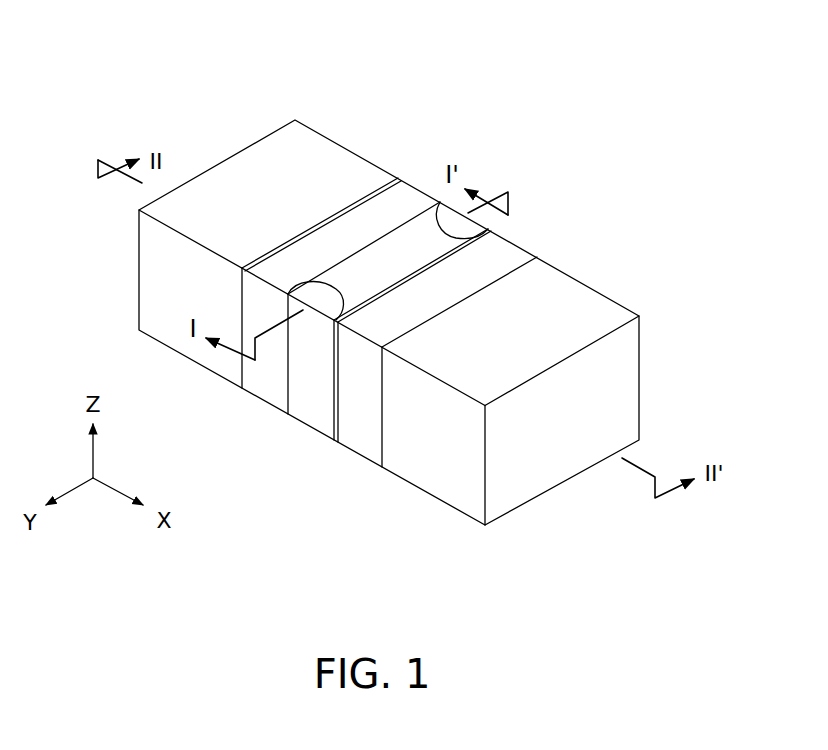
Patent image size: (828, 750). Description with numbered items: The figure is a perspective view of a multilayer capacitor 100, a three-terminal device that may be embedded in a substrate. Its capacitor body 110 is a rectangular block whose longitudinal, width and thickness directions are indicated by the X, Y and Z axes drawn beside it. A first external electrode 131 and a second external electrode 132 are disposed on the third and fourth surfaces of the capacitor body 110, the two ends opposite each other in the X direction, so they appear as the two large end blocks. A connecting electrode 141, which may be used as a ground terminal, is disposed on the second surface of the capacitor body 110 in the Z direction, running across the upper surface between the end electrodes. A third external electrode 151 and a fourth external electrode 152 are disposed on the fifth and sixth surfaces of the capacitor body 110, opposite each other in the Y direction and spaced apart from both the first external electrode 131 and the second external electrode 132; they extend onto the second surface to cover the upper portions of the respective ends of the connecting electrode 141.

The multilayer capacitor 100 is at (168, 66).
The capacitor body 110 is at (268, 383).
The first external electrode 131 is at (340, 145).
The second external electrode 132 is at (594, 286).
The connecting electrode 141 is at (402, 243).
The third external electrode 151 is at (309, 428).
The fourth external electrode 152 is at (492, 227).